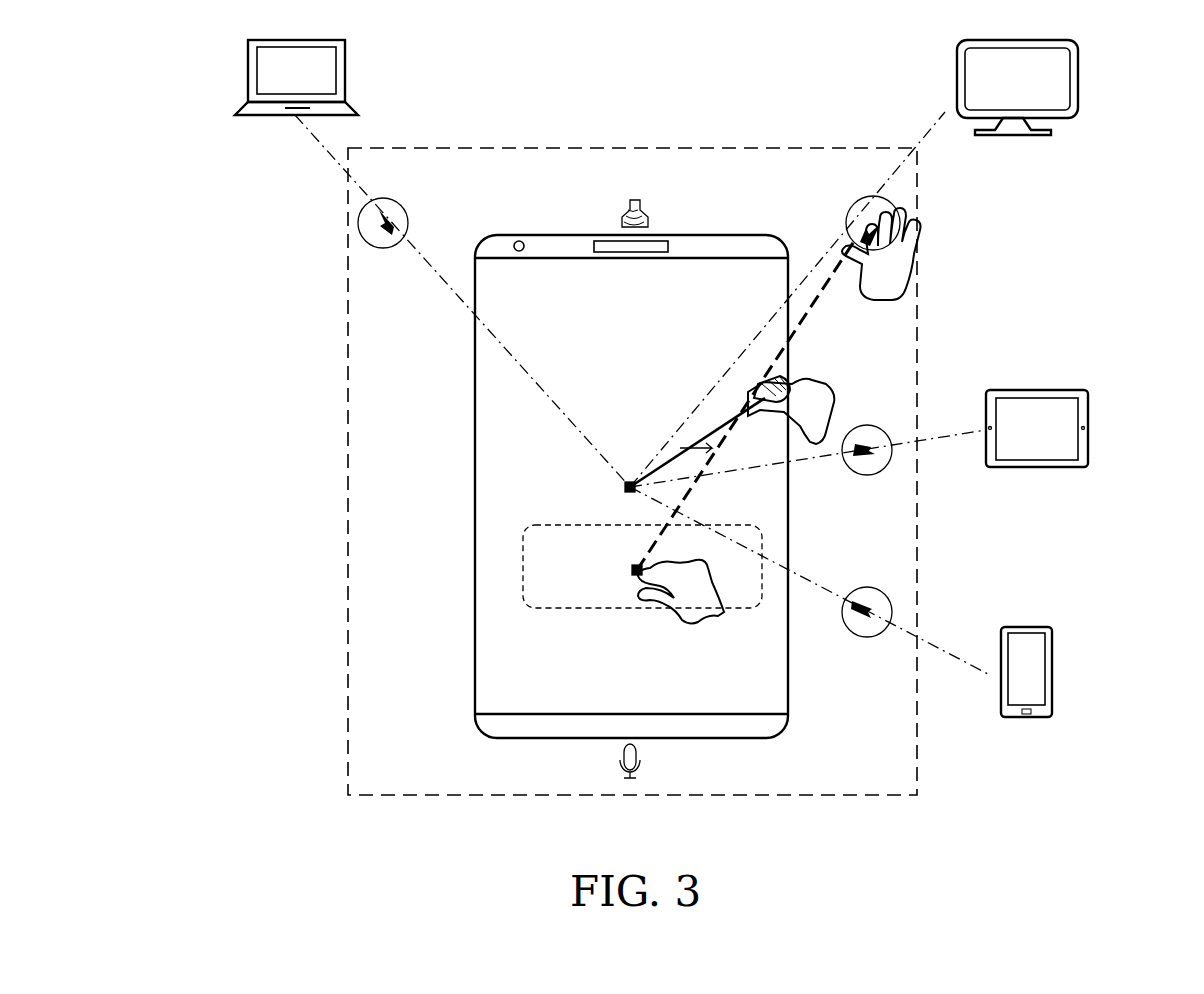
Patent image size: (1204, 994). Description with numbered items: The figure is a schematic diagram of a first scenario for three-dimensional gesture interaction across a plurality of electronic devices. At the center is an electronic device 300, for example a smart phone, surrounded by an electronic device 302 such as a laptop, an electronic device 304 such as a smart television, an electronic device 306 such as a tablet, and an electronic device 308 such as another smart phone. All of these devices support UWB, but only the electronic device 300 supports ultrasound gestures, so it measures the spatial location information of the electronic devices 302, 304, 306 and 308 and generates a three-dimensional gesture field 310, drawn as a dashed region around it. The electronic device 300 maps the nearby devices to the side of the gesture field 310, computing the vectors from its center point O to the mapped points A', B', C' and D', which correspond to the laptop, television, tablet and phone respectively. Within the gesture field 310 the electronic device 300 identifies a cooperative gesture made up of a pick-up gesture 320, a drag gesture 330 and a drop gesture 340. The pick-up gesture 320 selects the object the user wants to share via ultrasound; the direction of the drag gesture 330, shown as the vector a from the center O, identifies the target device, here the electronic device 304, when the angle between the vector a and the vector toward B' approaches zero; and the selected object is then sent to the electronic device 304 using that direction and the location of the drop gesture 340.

The electronic device 300 is at (475, 618).
The electronic device 302 is at (248, 70).
The electronic device 304 is at (1080, 78).
The electronic device 306 is at (1090, 428).
The electronic device 308 is at (1054, 670).
The 3D gesture field 310 is at (348, 712).
The pick-up gesture 320 is at (715, 633).
The drag gesture 330 is at (812, 382).
The drop gesture 340 is at (912, 275).